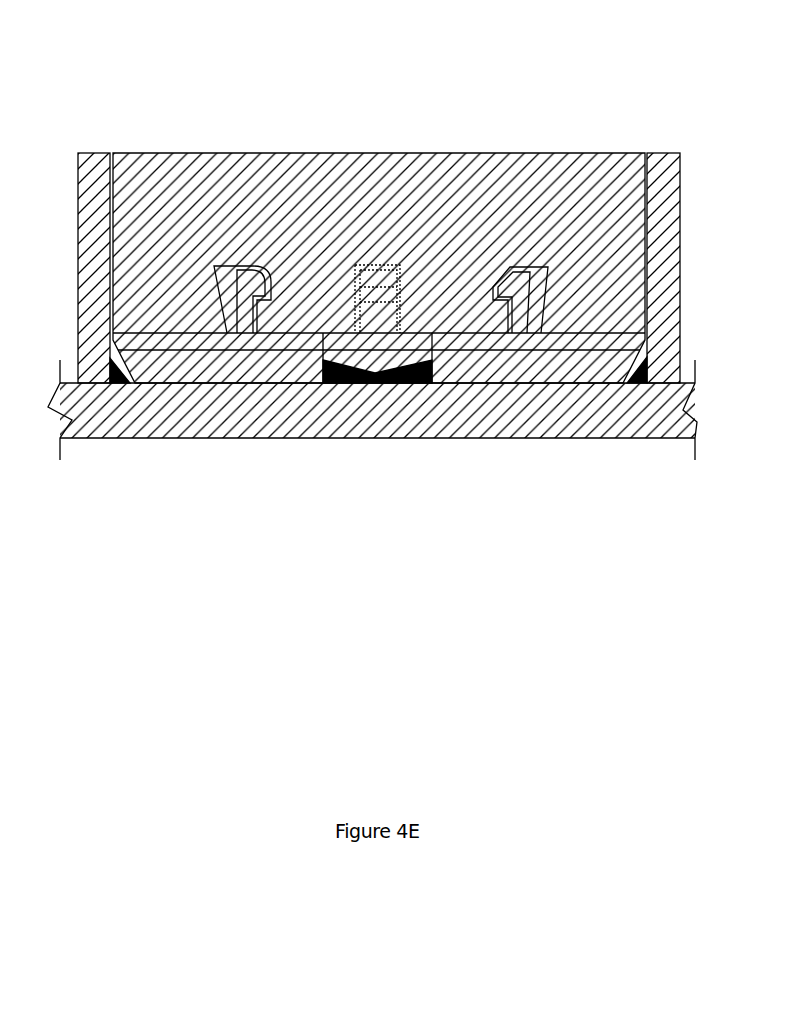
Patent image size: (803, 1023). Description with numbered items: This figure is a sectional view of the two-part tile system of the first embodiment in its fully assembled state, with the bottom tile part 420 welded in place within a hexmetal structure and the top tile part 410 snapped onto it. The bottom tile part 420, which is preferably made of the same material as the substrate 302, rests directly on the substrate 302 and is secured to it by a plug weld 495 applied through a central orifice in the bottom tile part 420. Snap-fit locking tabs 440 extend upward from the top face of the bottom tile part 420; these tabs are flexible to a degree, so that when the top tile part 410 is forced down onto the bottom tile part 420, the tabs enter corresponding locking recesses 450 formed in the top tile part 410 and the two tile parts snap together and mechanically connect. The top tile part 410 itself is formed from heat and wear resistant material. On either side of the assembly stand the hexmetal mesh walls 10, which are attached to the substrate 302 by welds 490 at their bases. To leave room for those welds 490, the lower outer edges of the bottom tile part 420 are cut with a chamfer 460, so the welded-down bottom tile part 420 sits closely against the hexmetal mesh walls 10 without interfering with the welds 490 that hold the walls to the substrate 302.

The hexmetal mesh walls 10 is at (100, 157).
The substrate 302 is at (255, 418).
The top tile part 410 is at (577, 187).
The bottom tile part 420 is at (594, 365).
The locking tabs 440 is at (510, 268).
The locking recesses 450 is at (216, 274).
The chamfer 460 is at (628, 383).
The welds 490 is at (115, 383).
The plug weld 495 is at (398, 383).